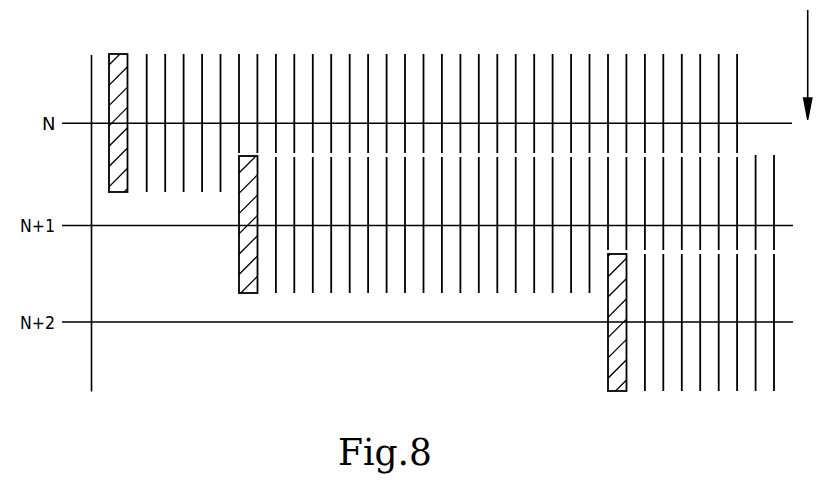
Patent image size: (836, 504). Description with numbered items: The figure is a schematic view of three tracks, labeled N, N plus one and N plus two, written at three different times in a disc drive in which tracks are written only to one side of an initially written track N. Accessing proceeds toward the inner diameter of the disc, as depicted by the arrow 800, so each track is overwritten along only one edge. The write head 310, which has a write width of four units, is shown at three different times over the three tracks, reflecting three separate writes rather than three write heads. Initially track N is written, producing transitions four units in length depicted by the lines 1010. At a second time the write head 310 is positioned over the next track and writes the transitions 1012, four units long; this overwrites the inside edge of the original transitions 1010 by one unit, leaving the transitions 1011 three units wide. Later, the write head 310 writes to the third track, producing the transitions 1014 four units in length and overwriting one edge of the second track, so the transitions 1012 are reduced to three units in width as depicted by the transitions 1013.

The write head 310 is at (121, 53).
The arrow 800 is at (808, 57).
The lines 1010 is at (147, 62).
The transitions 1011 is at (295, 63).
The transitions 1012 is at (387, 293).
The transitions 1013 is at (792, 137).
The transitions 1014 is at (774, 391).